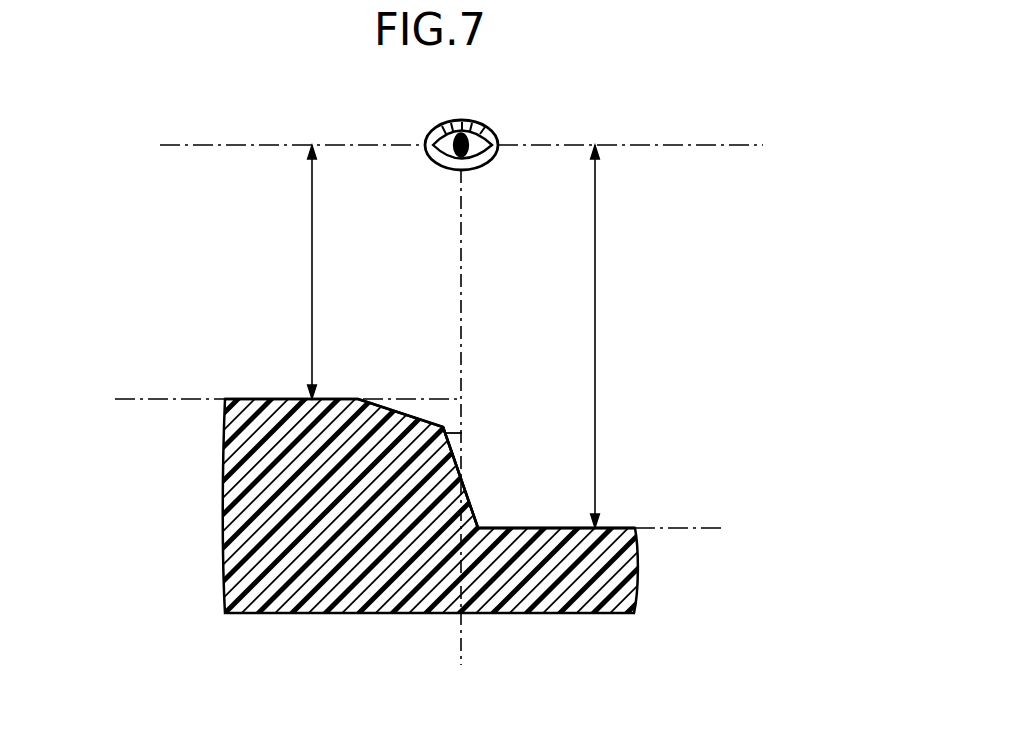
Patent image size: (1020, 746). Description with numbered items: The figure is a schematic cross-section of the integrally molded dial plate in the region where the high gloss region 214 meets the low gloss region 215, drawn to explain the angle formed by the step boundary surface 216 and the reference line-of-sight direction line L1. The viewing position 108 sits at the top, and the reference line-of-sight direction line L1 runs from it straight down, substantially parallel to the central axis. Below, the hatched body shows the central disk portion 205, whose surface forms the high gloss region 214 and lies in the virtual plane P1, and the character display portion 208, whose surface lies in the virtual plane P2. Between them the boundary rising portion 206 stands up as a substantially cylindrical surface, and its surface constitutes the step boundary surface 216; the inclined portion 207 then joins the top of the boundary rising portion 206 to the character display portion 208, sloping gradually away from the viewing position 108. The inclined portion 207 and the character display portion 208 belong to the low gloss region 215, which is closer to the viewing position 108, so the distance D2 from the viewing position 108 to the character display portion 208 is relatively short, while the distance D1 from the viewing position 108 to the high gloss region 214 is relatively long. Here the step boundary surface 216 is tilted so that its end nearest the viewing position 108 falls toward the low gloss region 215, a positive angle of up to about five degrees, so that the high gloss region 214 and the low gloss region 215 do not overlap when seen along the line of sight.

The viewing position 108 is at (497, 132).
The low gloss region 215 is at (277, 312).
The character display portion 208 is at (248, 397).
The inclined portion 207 is at (408, 417).
The boundary rising portion 206 is at (509, 412).
The step boundary surface 216 is at (462, 477).
The central disk portion 205 is at (617, 527).
The high gloss region 214 is at (611, 398).
The distance D1 is at (597, 205).
The distance D2 is at (312, 205).
The reference line-of-sight direction line L1 is at (461, 203).
The virtual plane P1 is at (700, 527).
The virtual plane P2 is at (135, 401).